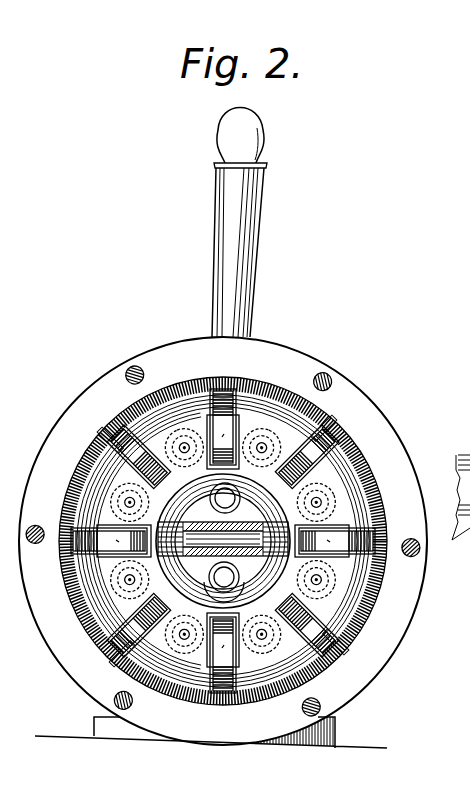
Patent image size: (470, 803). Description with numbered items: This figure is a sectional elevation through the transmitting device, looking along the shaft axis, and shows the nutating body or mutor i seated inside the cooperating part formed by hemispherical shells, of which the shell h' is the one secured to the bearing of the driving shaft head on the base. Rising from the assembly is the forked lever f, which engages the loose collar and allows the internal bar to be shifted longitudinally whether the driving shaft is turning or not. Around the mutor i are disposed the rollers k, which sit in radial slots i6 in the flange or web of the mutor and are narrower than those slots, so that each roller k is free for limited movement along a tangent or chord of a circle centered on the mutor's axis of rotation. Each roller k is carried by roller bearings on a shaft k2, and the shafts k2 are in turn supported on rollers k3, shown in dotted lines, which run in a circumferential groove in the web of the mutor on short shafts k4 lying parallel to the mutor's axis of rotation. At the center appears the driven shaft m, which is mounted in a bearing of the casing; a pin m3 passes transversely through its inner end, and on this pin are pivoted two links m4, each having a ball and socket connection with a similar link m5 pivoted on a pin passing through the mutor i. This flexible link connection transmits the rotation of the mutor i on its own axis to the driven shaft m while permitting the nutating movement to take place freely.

The forked lever f is at (238, 243).
The hemispherical shell h' is at (223, 525).
The roller k is at (345, 472).
The shaft k2 is at (332, 462).
The roller k3 is at (340, 500).
The short shaft k4 is at (301, 427).
The radial slot i6 is at (352, 483).
The nutating body or mutor i is at (283, 575).
The driven shaft m is at (207, 565).
The pin m3 is at (207, 552).
The link m4 is at (226, 570).
The link m5 is at (213, 510).